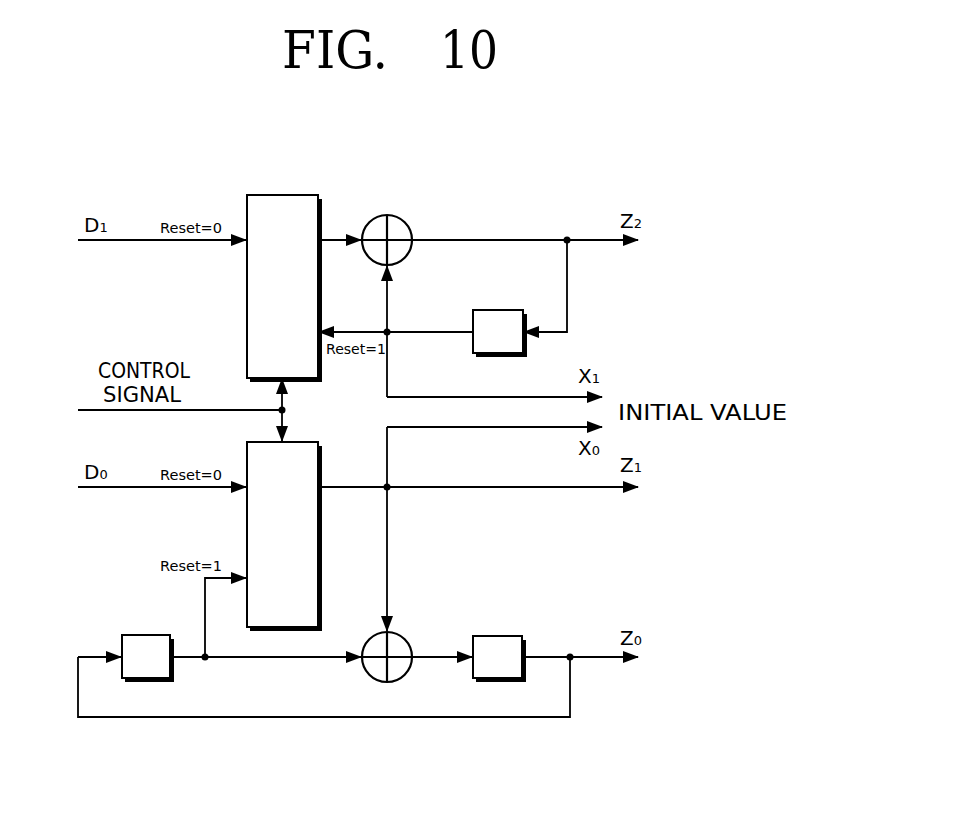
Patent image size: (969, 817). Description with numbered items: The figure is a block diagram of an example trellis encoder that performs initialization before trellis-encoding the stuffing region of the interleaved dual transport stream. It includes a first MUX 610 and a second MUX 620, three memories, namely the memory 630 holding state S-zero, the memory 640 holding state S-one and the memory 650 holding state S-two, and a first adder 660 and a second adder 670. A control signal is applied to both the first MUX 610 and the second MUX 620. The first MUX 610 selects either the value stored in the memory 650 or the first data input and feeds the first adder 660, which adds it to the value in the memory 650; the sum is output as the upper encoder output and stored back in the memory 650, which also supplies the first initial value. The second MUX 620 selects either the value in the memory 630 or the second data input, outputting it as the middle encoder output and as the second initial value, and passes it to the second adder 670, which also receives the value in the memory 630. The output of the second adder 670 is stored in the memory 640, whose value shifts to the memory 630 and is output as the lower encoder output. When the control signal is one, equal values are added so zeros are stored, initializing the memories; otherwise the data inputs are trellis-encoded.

The first MUX 610 is at (280, 195).
The second MUX 620 is at (310, 442).
The memory (S0) 630 is at (128, 635).
The memory (S1) 640 is at (494, 636).
The memory (S2) 650 is at (494, 310).
The first adder 660 is at (402, 223).
The second adder 670 is at (401, 640).